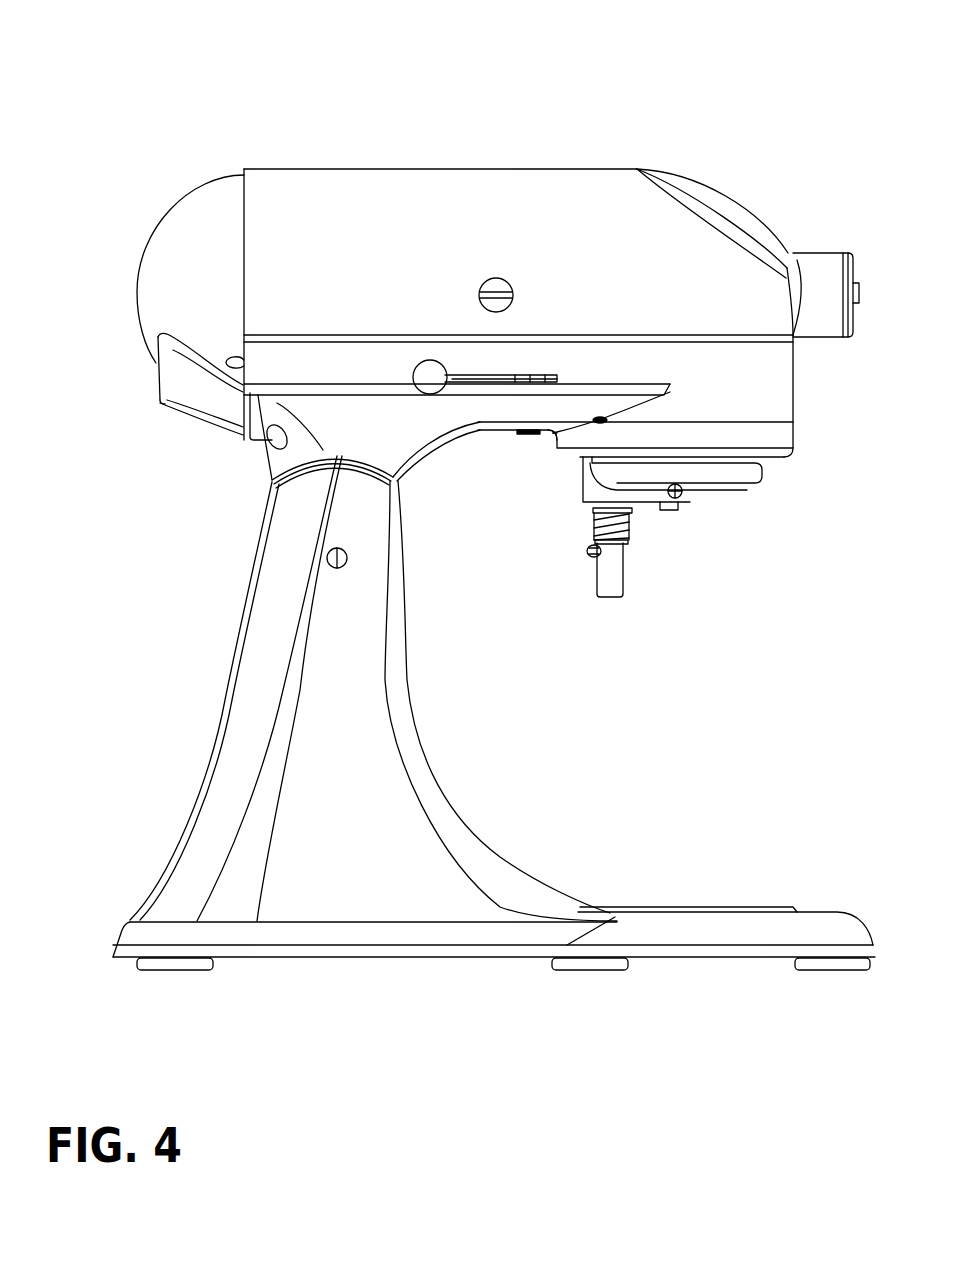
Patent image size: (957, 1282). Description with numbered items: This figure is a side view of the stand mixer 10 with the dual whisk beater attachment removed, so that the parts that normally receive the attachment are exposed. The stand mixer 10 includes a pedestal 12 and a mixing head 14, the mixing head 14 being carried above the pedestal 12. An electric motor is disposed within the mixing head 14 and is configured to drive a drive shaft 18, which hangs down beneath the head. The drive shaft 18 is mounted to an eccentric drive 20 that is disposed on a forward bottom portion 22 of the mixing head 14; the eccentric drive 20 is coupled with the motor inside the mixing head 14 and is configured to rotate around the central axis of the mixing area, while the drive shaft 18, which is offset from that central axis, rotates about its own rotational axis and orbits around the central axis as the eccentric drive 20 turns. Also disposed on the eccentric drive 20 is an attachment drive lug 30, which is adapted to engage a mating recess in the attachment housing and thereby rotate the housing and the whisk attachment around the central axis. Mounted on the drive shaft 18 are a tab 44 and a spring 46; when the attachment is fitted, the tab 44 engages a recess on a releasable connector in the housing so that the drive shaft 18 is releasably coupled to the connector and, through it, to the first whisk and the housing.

The stand mixer 10 is at (238, 80).
The pedestal 12 is at (267, 630).
The mixing head 14 is at (470, 193).
The drive shaft 18 is at (610, 588).
The eccentric drive 20 is at (733, 473).
The forward bottom portion 22 is at (583, 438).
The attachment drive lug 30 is at (702, 497).
The tab 44 is at (587, 552).
The spring 46 is at (627, 531).